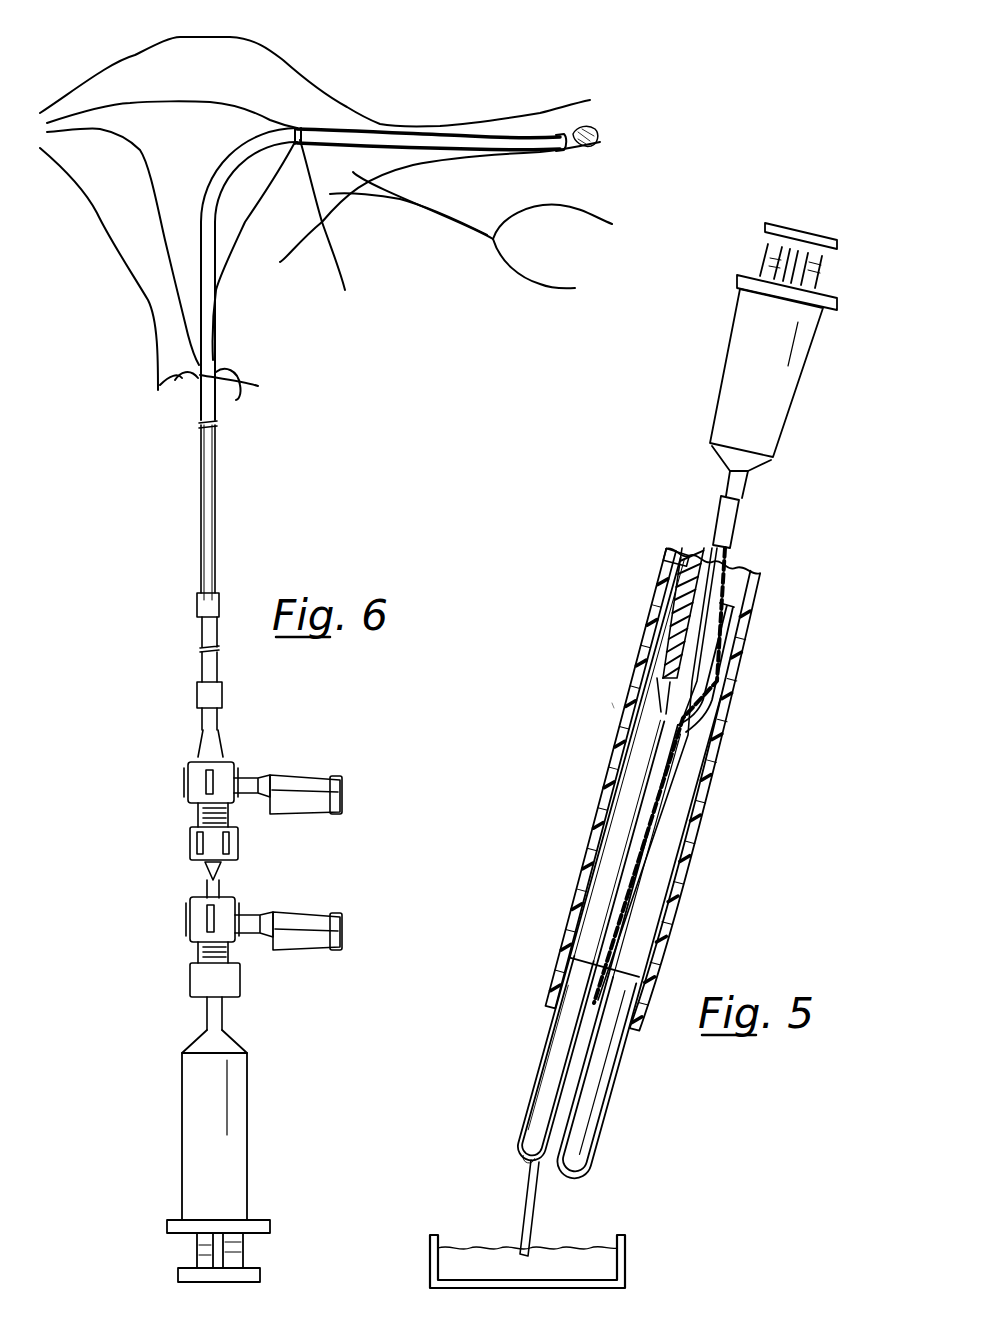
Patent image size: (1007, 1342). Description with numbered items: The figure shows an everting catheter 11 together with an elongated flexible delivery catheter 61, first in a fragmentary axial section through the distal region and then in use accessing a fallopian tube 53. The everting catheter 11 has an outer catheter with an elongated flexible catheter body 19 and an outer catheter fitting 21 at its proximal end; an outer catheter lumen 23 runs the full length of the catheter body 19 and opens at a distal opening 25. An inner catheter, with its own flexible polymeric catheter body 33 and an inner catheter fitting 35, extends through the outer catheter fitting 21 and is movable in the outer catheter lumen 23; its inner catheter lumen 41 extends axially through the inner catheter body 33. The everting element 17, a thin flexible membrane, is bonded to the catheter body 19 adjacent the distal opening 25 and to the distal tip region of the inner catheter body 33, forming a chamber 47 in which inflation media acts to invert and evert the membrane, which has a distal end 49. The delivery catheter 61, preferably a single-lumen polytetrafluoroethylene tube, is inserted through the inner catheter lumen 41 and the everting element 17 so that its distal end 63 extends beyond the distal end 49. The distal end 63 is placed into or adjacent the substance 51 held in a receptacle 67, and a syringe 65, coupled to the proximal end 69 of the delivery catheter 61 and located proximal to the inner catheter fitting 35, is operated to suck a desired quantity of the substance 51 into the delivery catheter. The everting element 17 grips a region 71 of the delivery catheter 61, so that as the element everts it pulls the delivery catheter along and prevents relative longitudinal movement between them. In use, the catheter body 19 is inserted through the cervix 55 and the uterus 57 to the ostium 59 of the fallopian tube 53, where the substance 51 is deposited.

In FIG. 6, the everting catheter 11 is at (173, 488).
In FIG. 5, the everting catheter 11 is at (614, 702).
In FIG. 5, the everting element 17 is at (543, 1046).
In FIG. 5, the catheter body 19 is at (737, 673).
In FIG. 6, the outer catheter fitting 21 is at (188, 784).
In FIG. 5, the outer catheter lumen 23 is at (695, 737).
In FIG. 6, the distal opening 25 is at (297, 130).
In FIG. 5, the distal opening 25 is at (553, 1003).
In FIG. 5, the catheter body 33 is at (722, 606).
In FIG. 6, the inner catheter fitting 35 is at (184, 926).
In FIG. 5, the inner catheter lumen 41 is at (666, 560).
In FIG. 5, the chamber 47 is at (600, 1058).
In FIG. 5, the distal end 49 is at (517, 1168).
In FIG. 6, the substance 51 is at (600, 126).
In FIG. 5, the substance 51 is at (508, 1260).
In FIG. 6, the fallopian tube 53 is at (545, 130).
In FIG. 6, the cervix 55 is at (258, 386).
In FIG. 6, the uterus 57 is at (188, 155).
In FIG. 6, the ostium 59 is at (368, 293).
In FIG. 5, the delivery catheter 61 is at (630, 830).
In FIG. 6, the distal end 63 is at (562, 128).
In FIG. 5, the distal end 63 is at (537, 1240).
In FIG. 6, the syringe 65 is at (183, 1136).
In FIG. 5, the syringe 65 is at (752, 372).
In FIG. 5, the receptacle 67 is at (620, 1271).
In FIG. 5, the proximal end 69 is at (737, 511).
In FIG. 5, the region 71 is at (580, 1092).